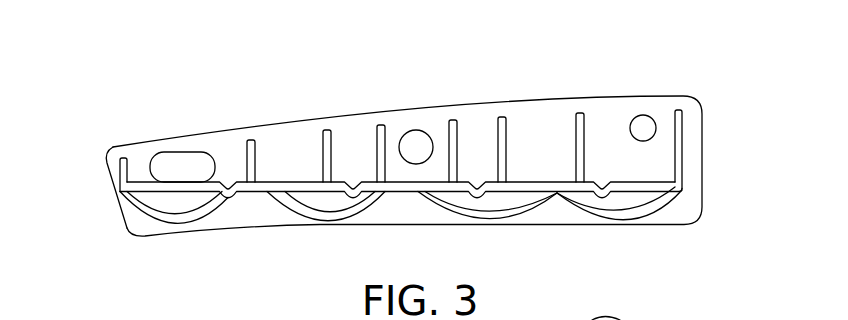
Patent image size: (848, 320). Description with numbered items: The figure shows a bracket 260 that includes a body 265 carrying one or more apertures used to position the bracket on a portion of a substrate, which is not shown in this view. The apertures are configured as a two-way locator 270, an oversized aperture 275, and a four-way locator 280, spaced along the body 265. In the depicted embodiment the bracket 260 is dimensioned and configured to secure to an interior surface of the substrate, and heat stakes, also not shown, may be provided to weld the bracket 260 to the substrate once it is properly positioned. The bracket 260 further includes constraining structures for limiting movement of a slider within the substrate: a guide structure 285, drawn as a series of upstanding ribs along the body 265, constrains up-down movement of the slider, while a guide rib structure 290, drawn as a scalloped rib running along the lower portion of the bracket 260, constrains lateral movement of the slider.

The bracket 260 is at (724, 70).
The body 265 is at (116, 200).
The two-way locator 270 is at (190, 152).
The oversized aperture 275 is at (415, 130).
The four-way locator 280 is at (642, 115).
The guide structure 285 is at (470, 122).
The guide rib structure 290 is at (674, 213).